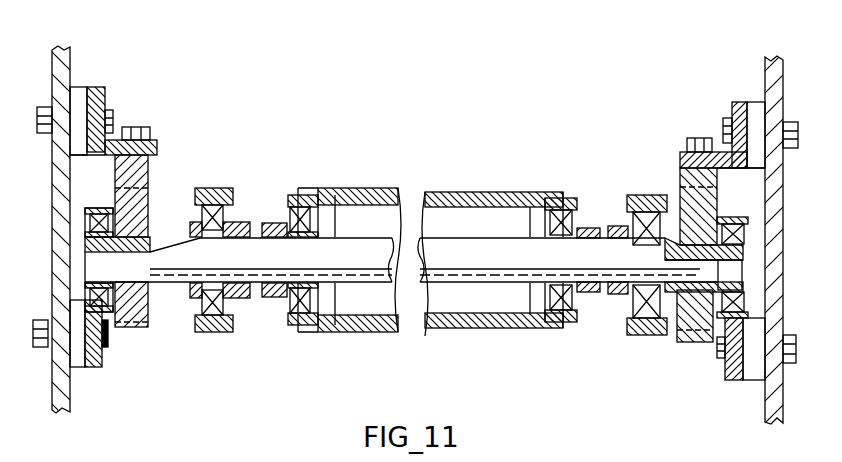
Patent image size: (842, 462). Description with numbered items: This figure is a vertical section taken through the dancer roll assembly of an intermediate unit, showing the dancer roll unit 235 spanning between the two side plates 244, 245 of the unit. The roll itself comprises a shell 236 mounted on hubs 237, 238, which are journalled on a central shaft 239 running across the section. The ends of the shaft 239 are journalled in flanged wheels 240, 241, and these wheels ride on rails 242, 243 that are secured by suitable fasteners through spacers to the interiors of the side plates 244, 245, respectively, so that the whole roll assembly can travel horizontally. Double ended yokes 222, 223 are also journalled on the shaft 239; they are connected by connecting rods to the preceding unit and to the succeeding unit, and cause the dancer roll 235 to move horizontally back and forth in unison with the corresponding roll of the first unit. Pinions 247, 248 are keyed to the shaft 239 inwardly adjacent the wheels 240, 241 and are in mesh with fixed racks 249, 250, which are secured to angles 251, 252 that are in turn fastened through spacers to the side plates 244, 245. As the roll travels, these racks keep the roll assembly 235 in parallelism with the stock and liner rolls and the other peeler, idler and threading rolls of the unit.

The double ended yoke 222 is at (212, 197).
The double ended yoke 223 is at (643, 197).
The dancer roll unit 235 is at (498, 345).
The shell 236 is at (377, 328).
The hub 237 is at (300, 327).
The hub 238 is at (580, 328).
The shaft 239 is at (462, 280).
The flanged wheel 240 is at (94, 212).
The flanged wheel 241 is at (745, 224).
The rail 242 is at (97, 367).
The rail 243 is at (735, 378).
The side plate 244 is at (63, 408).
The side plate 245 is at (777, 410).
The pinion 247 is at (137, 326).
The pinion 248 is at (705, 332).
The fixed rack 249 is at (148, 174).
The fixed rack 250 is at (680, 176).
The angle 251 is at (98, 102).
The angle 252 is at (732, 110).